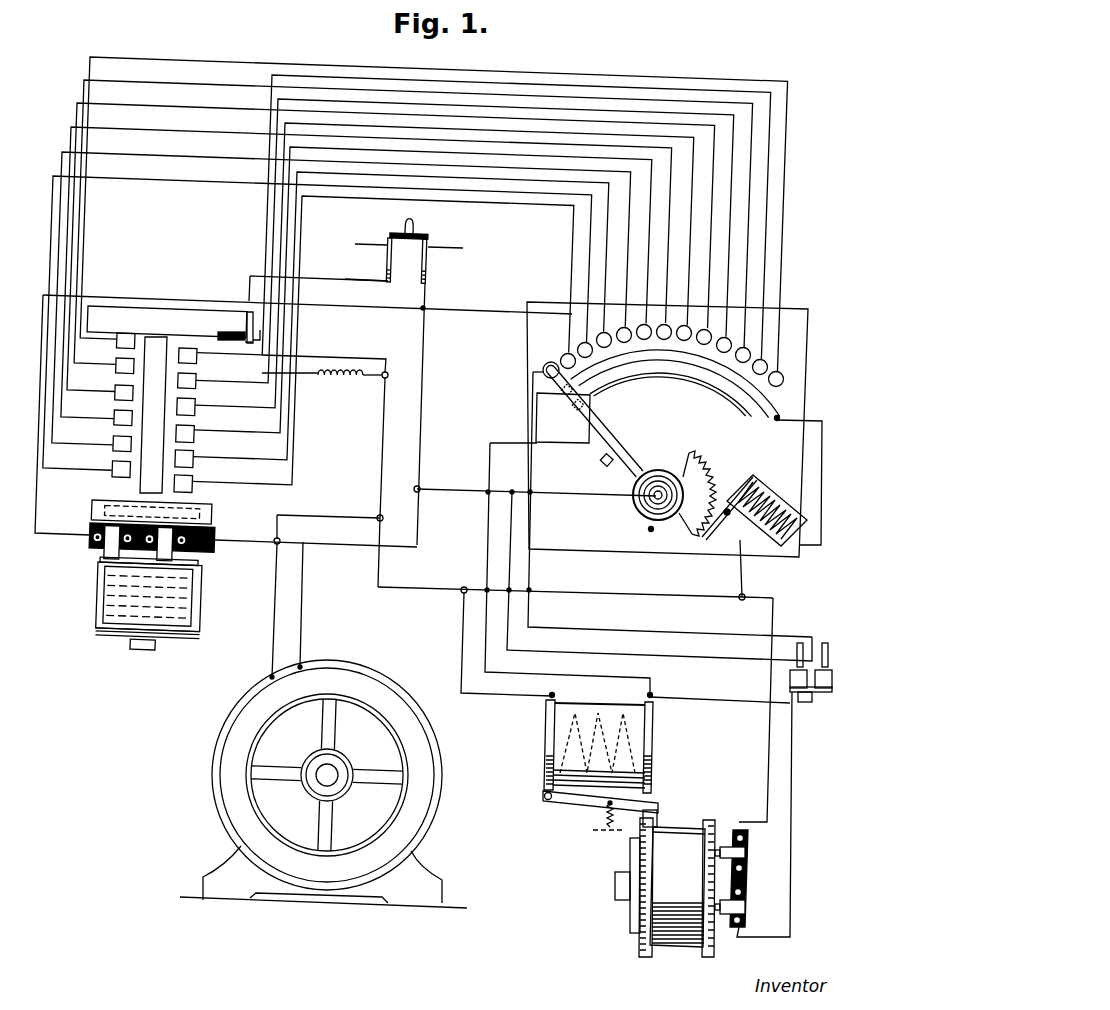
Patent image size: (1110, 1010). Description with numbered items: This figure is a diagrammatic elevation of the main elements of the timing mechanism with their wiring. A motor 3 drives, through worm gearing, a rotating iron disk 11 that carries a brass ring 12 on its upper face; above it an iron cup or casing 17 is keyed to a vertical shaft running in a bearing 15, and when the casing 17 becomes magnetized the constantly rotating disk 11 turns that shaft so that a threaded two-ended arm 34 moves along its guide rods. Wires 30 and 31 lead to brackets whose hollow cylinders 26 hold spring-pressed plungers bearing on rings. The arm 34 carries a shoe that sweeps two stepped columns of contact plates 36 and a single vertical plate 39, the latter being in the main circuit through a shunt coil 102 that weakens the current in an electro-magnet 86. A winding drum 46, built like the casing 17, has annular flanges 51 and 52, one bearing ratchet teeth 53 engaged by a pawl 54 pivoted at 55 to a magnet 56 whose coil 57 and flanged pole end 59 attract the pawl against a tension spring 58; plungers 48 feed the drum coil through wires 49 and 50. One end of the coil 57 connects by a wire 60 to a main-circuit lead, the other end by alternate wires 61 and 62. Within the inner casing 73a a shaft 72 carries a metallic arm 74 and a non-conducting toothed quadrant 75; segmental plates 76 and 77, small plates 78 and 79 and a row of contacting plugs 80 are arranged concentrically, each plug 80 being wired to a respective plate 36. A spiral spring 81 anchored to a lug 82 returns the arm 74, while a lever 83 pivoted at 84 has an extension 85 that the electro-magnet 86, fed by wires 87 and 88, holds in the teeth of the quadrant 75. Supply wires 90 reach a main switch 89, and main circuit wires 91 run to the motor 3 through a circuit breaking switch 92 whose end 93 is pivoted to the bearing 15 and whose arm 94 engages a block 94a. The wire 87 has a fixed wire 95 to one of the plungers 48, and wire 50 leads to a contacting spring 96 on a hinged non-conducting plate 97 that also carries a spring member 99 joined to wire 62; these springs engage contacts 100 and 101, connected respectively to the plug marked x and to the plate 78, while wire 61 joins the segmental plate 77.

The motor 3 is at (352, 684).
The disk 11 is at (183, 640).
The metallic ring 12 is at (105, 635).
The bearing 15 is at (250, 297).
The cup or casing 17 is at (203, 601).
The hollow cylinder 26 is at (176, 553).
The wire 30 is at (139, 298).
The wire 31 is at (240, 540).
The transverse two-ended arm 34 is at (213, 512).
The contact plates 36 is at (197, 410).
The contacting plate 39 is at (153, 415).
The winding drum 46 is at (677, 887).
The contacting plungers 48 is at (740, 830).
The wire 49 is at (767, 808).
The wire 50 is at (762, 938).
The annular flange 51 is at (640, 950).
The annular flange 52 is at (710, 958).
The ratchet teeth 53 is at (645, 940).
The pawl 54 is at (660, 808).
The pivot 55 is at (548, 800).
The magnet 56 is at (655, 742).
The electric coil 57 is at (546, 740).
The tension spring 58 is at (607, 827).
The flanged end 59 is at (653, 756).
The wire 60 is at (470, 698).
The wire 61 is at (633, 680).
The wire 62 is at (682, 698).
The shaft 72 is at (650, 494).
The inner casing 73a is at (790, 312).
The metallic arm 74 is at (612, 458).
The toothed quadrant 75 is at (708, 479).
The segmental metallic plate 76 is at (668, 357).
The segmental metallic plate 77 is at (708, 386).
The contacting plate 78 is at (556, 385).
The contacting plate 79 is at (575, 404).
The contacting plugs 80 is at (768, 367).
The spiral spring 81 is at (640, 512).
The lug 82 is at (651, 531).
The lever 83 is at (728, 509).
The pivot 84 is at (726, 522).
The extension 85 is at (708, 541).
The electro-magnet 86 is at (781, 548).
The wire 87 is at (741, 576).
The wire 88 is at (822, 480).
The main switch 89 is at (428, 237).
The wires 90 is at (364, 244).
The main circuit wires 91 is at (350, 278).
The circuit breaking switch 92 is at (243, 333).
The outwardly projecting end 93 is at (222, 333).
The arm 94 is at (255, 342).
The block 94a is at (258, 325).
The fixed wire 95 is at (790, 742).
The metallic contacting spring 96 is at (772, 701).
The hinged plate 97 is at (806, 702).
The spring contact-member 99 is at (790, 682).
The contact 100 is at (800, 643).
The contact 101 is at (825, 643).
The shunt coil 102 is at (332, 386).